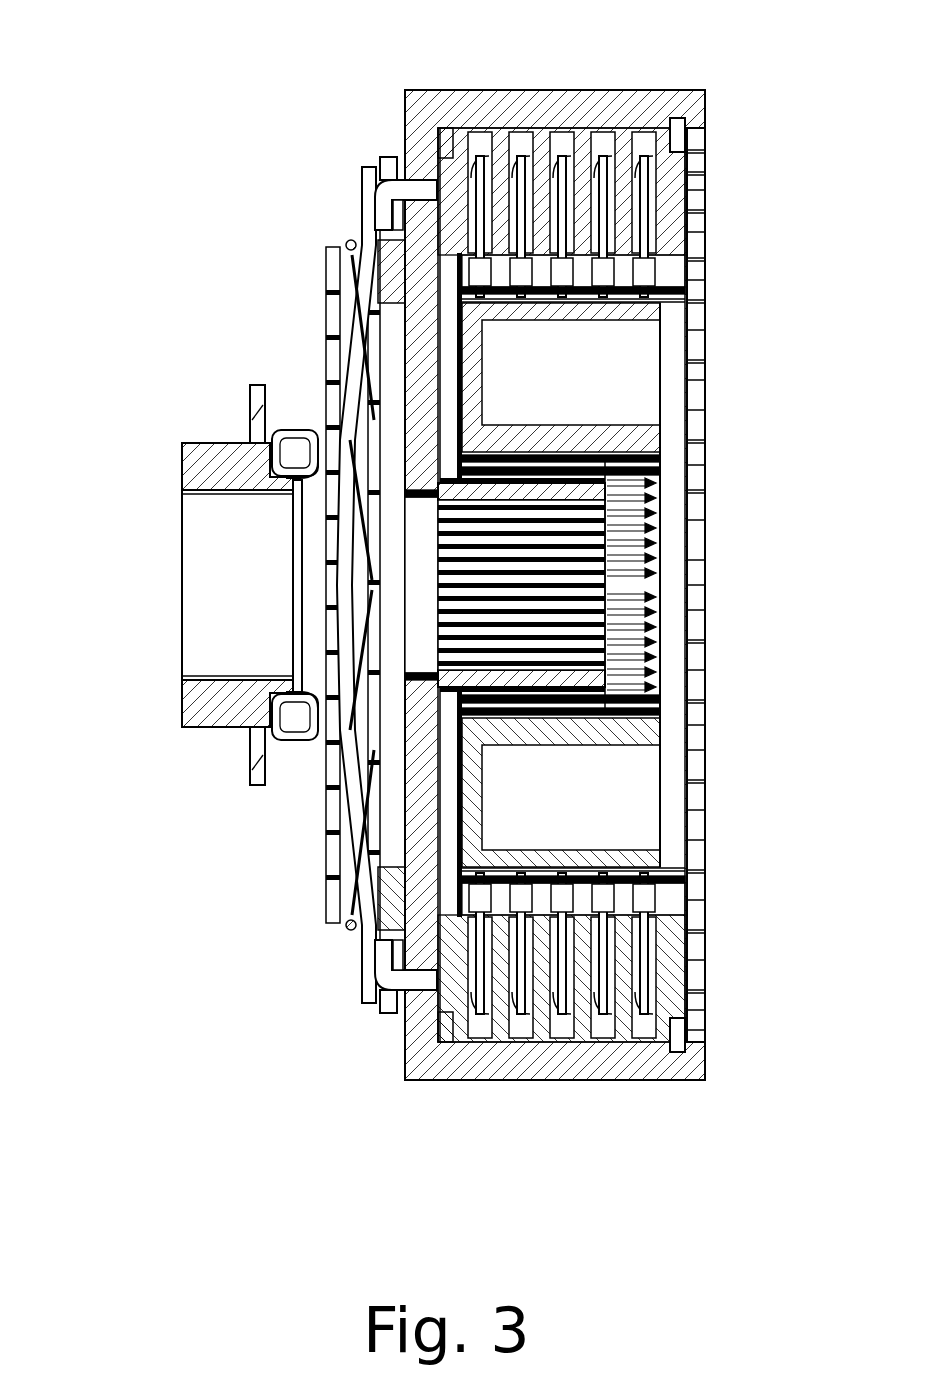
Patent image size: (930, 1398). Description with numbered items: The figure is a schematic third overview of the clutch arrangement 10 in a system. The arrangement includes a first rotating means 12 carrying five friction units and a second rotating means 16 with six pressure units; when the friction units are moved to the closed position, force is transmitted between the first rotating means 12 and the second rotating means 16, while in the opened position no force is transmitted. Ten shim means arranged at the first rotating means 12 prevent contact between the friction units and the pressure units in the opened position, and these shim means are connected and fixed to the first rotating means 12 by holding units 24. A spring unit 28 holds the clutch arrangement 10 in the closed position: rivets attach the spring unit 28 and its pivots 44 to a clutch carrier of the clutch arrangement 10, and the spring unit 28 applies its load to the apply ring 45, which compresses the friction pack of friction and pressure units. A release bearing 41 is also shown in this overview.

The clutch arrangement 10 is at (184, 93).
The first rotating means 12 is at (680, 100).
The second rotating means 16 is at (685, 312).
The holding units 24 is at (636, 1045).
The spring unit 28 is at (340, 703).
The release bearing 41 is at (207, 582).
The pivots 44 is at (356, 935).
The apply ring 45 is at (388, 155).